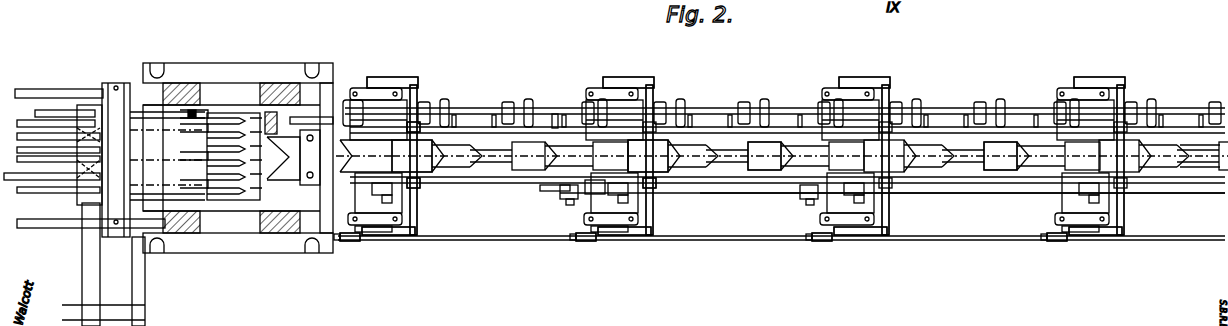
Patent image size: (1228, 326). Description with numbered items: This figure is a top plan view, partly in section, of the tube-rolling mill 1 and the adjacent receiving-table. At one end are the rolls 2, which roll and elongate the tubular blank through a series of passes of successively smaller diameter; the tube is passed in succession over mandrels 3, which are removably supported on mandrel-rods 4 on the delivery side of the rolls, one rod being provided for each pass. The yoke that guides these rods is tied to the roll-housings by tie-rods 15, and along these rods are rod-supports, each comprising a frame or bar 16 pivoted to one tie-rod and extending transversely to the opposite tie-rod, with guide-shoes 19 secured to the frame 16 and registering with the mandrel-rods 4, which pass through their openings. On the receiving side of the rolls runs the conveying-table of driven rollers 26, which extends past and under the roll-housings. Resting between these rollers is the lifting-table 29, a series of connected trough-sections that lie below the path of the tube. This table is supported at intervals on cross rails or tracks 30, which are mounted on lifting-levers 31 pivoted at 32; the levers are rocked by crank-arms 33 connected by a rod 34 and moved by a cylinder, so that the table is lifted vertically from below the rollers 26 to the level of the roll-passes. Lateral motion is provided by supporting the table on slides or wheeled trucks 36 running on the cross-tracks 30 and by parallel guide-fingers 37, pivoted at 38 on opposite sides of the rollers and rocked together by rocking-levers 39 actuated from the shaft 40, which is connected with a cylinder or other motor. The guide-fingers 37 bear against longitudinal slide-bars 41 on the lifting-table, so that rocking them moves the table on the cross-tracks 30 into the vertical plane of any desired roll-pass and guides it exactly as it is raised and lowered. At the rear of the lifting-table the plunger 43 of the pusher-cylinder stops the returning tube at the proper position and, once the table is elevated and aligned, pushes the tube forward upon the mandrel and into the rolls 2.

The housing 1 is at (238, 158).
The rolls 2 is at (279, 180).
The mandrels 3 is at (243, 195).
The mandrel-rods 4 is at (215, 148).
The tie-rods 15 is at (62, 89).
The frame or bar 16 is at (116, 83).
The guide-shoes 19 is at (78, 200).
The driven rollers 26 is at (76, 148).
The lifting-table 29 is at (425, 162).
The cross rails or tracks 30 is at (418, 215).
The lifting-levers 31 is at (635, 80).
The pivot 32 is at (378, 238).
The crank-arms 33 is at (348, 242).
The rod 34 is at (765, 240).
The slides or wheeled trucks 36 is at (410, 185).
The guide-fingers 37 is at (585, 125).
The pivot 38 is at (555, 192).
The rocking-levers 39 is at (570, 204).
The shaft 40 is at (737, 194).
The longitudinal slide-bars 41 is at (768, 128).
The plunger 43 is at (1185, 168).